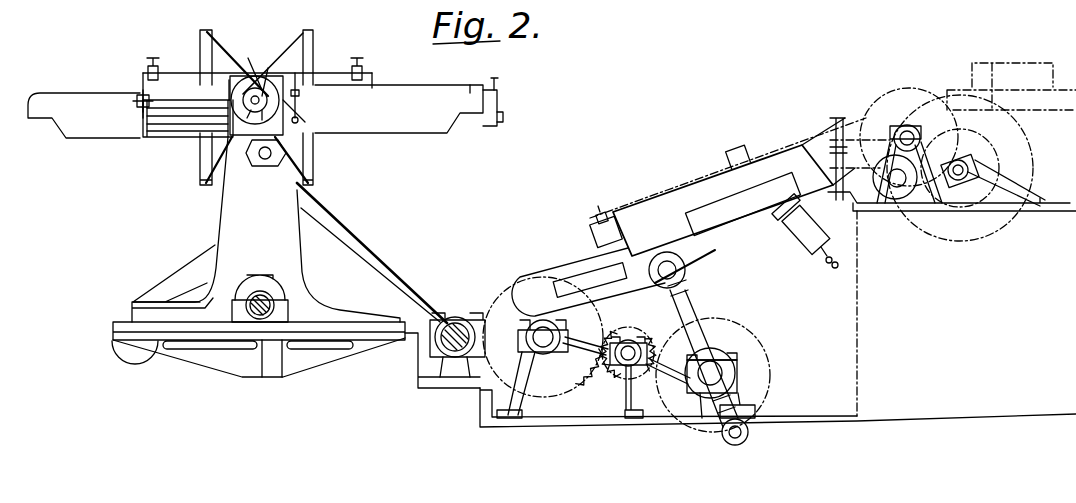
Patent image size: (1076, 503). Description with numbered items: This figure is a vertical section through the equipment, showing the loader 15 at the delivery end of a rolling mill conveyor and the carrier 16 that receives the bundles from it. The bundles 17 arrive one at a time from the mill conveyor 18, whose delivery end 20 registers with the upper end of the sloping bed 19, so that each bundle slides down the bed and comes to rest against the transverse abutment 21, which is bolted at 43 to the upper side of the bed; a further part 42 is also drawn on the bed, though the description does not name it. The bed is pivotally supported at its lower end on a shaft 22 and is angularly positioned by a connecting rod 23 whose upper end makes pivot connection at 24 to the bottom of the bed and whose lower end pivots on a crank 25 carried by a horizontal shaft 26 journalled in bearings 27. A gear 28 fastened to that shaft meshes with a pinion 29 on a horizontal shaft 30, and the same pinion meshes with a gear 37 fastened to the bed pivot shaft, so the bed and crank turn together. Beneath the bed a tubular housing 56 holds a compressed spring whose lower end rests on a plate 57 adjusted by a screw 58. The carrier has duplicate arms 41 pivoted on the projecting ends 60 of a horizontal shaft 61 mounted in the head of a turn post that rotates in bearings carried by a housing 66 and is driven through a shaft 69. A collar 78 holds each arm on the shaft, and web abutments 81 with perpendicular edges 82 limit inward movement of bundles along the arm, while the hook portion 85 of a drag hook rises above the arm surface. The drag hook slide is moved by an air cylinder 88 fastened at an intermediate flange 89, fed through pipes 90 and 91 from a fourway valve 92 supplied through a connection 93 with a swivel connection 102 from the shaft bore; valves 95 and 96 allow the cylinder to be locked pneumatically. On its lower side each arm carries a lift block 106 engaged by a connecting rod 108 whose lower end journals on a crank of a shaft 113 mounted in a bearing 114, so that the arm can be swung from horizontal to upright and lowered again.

The loader 15 is at (587, 260).
The carrier 16 is at (128, 140).
The bundles 17 is at (656, 198).
The mill conveyor 18 is at (880, 120).
The bed 19 is at (752, 160).
The delivery end 20 is at (804, 143).
The transverse abutment 21 is at (590, 232).
The shaft 22 is at (543, 354).
The connecting rod 23 is at (690, 300).
The pivot connection 24 is at (678, 272).
The crank 25 is at (748, 405).
The horizontal shaft 26 is at (697, 384).
The bearings 27 is at (738, 367).
The gear 28 is at (768, 347).
The pinion 29 is at (618, 368).
The horizontal shaft 30 is at (634, 342).
The gear 37 is at (604, 332).
The arms 41 is at (465, 80).
The lug 42 is at (728, 160).
The bolt 43 is at (598, 206).
The tubular housing 56 is at (822, 226).
The plate 57 is at (824, 261).
The screw 58 is at (845, 267).
The projecting ends 60 is at (250, 124).
The horizontal shaft 61 is at (283, 116).
The housing 66 is at (222, 210).
The shaft 69 is at (272, 292).
The collar 78 is at (269, 123).
The web abutments 81 is at (214, 37).
The abutting edges 82 is at (200, 40).
The hook portion 85 is at (505, 94).
The air cylinder 88 is at (188, 118).
The intermediate flange 89 is at (230, 108).
The pipe 90 is at (144, 88).
The pipe 91 is at (304, 94).
The fourway valve 92 is at (366, 64).
The connection 93 is at (271, 73).
The valve 95 is at (150, 100).
The valve 96 is at (230, 72).
The swivel connection 102 is at (256, 105).
The lift block 106 is at (262, 167).
The connecting rod 108 is at (348, 228).
The shaft 113 is at (460, 318).
The bearing 114 is at (418, 365).